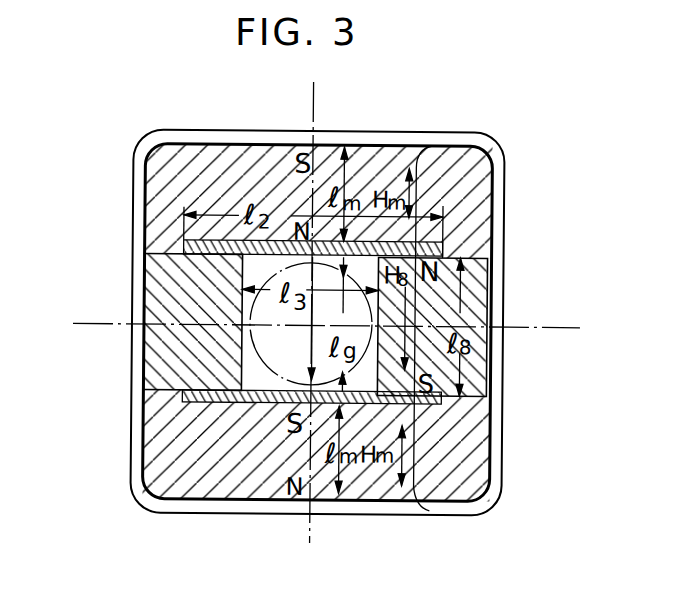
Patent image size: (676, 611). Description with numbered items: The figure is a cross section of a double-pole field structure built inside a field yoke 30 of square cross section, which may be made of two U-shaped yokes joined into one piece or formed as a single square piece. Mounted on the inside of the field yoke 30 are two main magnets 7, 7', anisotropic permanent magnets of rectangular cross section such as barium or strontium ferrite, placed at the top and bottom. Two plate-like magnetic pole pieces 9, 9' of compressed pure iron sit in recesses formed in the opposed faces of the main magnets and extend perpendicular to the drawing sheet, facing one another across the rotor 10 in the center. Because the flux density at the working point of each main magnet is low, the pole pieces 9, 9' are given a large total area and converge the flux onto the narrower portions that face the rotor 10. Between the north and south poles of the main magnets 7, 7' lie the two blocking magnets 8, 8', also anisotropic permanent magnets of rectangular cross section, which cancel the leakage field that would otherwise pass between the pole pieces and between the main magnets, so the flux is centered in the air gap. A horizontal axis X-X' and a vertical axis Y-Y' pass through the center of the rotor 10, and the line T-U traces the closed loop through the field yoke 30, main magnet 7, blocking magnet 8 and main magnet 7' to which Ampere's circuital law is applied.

The main magnet 7 is at (319, 180).
The main magnet 7' is at (342, 445).
The blocking magnet 8 is at (458, 327).
The blocking magnet 8' is at (162, 321).
The magnetic pole piece 9 is at (314, 218).
The magnetic pole piece 9' is at (312, 422).
The rotor 10 is at (243, 372).
The field yoke 30 is at (132, 445).
The X axis end X is at (466, 330).
The X' axis end X' is at (188, 319).
The Y axis end Y is at (322, 198).
The Y' axis end Y' is at (320, 444).
The line T-U end T is at (426, 217).
The line T-U end U is at (416, 438).